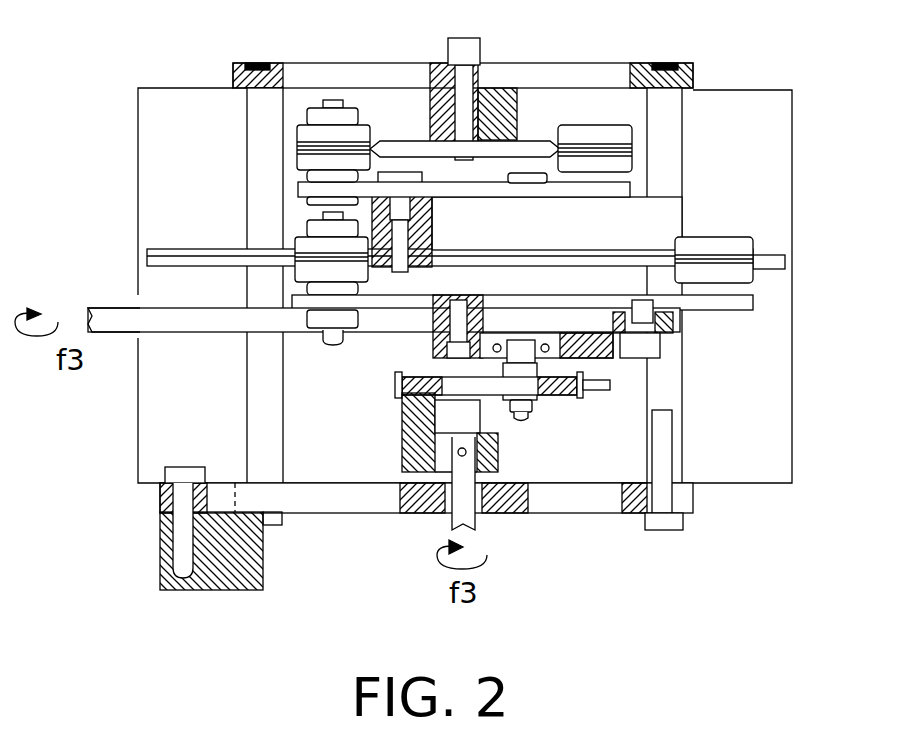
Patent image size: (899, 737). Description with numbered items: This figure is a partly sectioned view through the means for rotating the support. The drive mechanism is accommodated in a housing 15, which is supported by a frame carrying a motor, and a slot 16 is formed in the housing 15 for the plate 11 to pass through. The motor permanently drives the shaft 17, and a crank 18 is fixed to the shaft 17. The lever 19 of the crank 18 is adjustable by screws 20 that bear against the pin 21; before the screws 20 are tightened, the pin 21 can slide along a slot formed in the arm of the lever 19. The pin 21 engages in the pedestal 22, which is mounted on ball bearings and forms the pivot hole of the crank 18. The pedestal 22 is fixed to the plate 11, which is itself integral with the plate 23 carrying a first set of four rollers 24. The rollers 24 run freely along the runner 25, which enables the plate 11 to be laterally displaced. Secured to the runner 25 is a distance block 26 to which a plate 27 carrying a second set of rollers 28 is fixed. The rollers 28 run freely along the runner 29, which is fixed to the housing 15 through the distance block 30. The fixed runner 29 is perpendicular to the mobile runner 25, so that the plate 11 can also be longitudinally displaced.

The plate 11 is at (121, 318).
The housing 15 is at (138, 186).
The slot 16 is at (138, 302).
The shaft 17 is at (490, 506).
The crank 18 is at (408, 452).
The lever 19 is at (490, 408).
The screws 20 is at (395, 385).
The pin 21 is at (503, 362).
The pedestal 22 is at (567, 362).
The plate 23 is at (292, 302).
The rollers 24 is at (293, 240).
The runner 25 is at (774, 256).
The distance block 26 is at (657, 216).
The plate 27 is at (295, 188).
The rollers 28 is at (318, 128).
The runner 29 is at (392, 142).
The distance block 30 is at (504, 96).